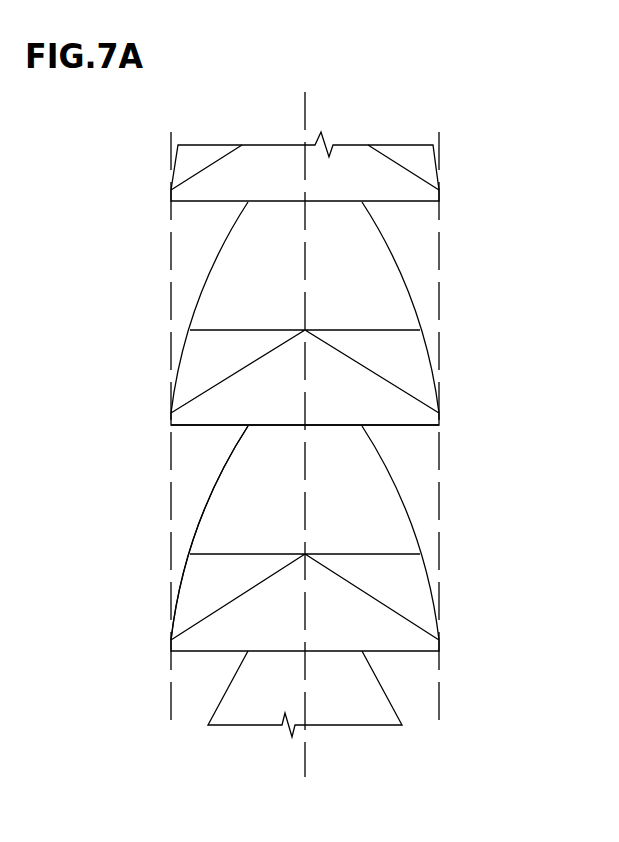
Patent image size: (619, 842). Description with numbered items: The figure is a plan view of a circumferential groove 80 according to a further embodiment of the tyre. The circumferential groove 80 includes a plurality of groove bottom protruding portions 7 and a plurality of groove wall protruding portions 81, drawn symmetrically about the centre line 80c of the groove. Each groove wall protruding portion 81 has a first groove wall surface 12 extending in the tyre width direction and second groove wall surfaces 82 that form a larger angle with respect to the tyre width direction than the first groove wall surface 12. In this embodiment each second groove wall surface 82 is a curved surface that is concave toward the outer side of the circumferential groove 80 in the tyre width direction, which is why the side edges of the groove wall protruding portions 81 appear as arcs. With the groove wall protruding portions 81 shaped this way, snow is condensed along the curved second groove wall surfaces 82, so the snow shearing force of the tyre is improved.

The groove bottom protruding portion 7 is at (233, 317).
The first groove wall surface 12 is at (209, 422).
The circumferential groove 80 is at (470, 145).
The center line 80c is at (307, 420).
The groove wall protruding portion 81 is at (197, 240).
The second groove wall surface 82 is at (202, 518).